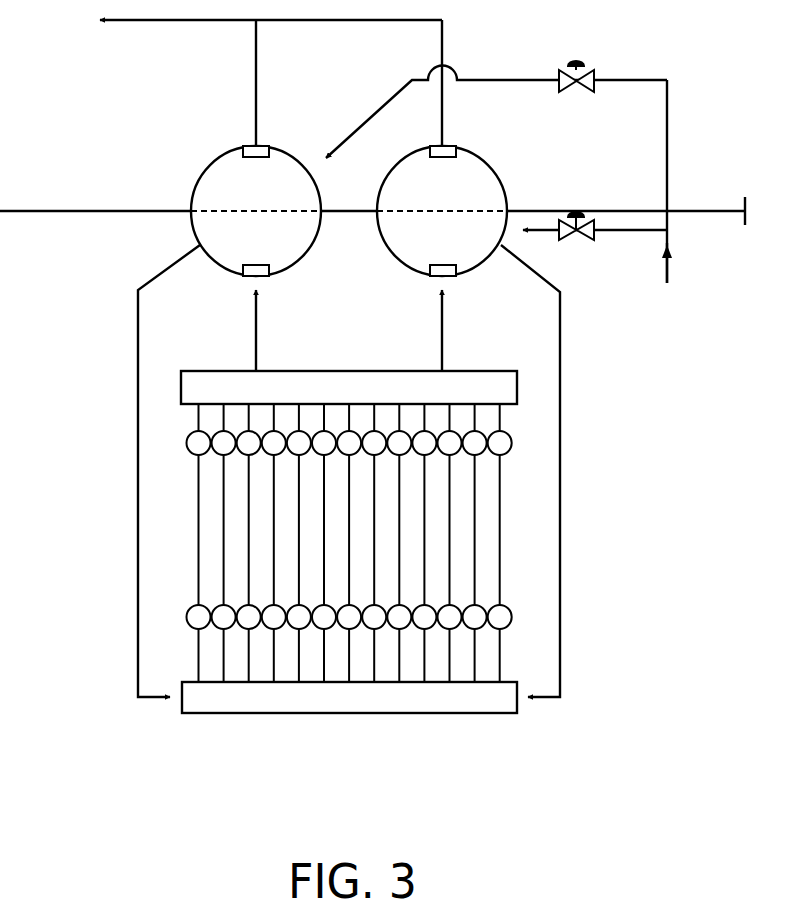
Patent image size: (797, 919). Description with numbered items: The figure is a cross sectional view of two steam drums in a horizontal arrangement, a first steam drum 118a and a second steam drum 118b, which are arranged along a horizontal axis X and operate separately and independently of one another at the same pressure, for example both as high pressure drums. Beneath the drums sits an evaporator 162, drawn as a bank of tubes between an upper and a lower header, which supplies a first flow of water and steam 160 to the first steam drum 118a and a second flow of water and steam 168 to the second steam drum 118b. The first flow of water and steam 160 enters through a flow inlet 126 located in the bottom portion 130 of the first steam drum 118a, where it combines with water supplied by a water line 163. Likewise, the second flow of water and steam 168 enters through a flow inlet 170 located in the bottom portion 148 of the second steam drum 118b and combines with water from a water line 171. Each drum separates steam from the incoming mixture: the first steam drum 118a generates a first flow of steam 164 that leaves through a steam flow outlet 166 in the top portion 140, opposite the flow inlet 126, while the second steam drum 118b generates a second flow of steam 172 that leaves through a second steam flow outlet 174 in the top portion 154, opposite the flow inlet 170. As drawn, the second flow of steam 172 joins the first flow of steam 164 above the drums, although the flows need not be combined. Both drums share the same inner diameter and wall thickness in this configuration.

The horizontal axis X is at (703, 211).
The first steam drum 118a is at (222, 155).
The second steam drum 118b is at (500, 175).
The flow inlet 126 is at (257, 265).
The bottom portion 130 is at (170, 240).
The top portion 140 is at (158, 160).
The bottom portion 148 is at (538, 262).
The top portion 154 is at (548, 188).
The first flow of water and steam 160 is at (257, 328).
The evaporator 162 is at (516, 517).
The water line 163 is at (372, 110).
The first flow of steam 164 is at (258, 100).
The steam flow outlet 166 is at (257, 158).
The second flow of water and steam 168 is at (443, 327).
The flow inlet 170 is at (444, 265).
The water line 171 is at (548, 233).
The second flow of steam 172 is at (444, 107).
The second steam flow outlet 174 is at (438, 158).